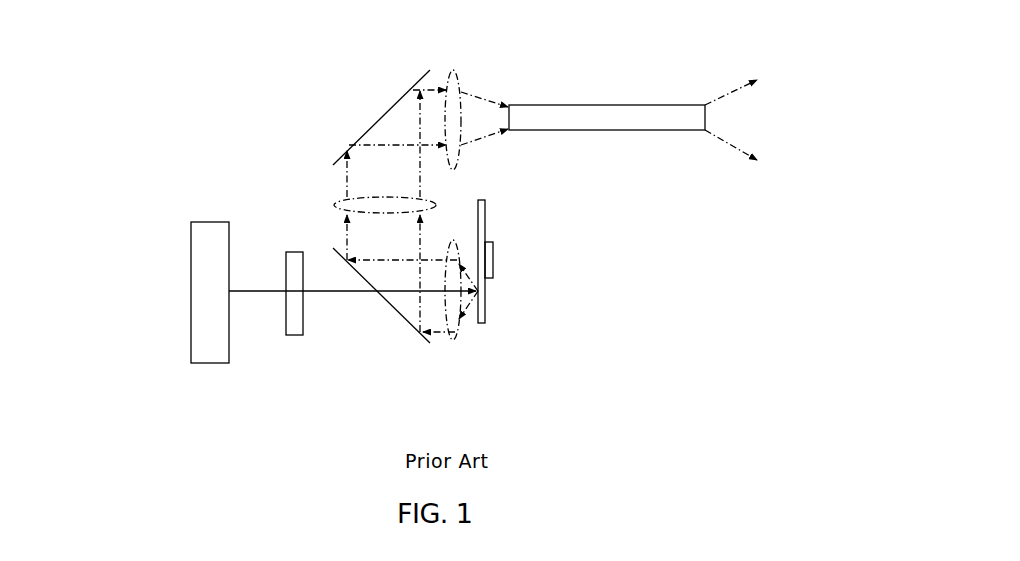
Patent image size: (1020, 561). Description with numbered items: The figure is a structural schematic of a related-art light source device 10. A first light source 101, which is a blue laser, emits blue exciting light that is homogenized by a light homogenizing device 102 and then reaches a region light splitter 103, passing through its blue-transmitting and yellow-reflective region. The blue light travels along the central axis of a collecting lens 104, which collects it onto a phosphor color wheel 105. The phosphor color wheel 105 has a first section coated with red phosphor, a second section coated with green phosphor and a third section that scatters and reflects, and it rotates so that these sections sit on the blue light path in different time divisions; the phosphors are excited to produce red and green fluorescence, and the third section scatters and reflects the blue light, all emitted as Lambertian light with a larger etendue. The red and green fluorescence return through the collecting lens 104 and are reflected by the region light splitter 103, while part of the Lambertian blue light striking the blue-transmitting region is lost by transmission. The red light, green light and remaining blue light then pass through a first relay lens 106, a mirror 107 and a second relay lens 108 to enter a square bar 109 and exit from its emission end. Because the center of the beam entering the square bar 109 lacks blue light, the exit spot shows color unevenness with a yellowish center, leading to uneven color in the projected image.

The light source device 10 is at (690, 273).
The first light source 101 is at (192, 328).
The light homogenizing device 102 is at (303, 337).
The region light splitter 103 is at (420, 333).
The collecting lens 104 is at (463, 343).
The phosphor color wheel 105 is at (485, 308).
The first relay lens 106 is at (333, 205).
The mirror 107 is at (357, 138).
The second relay lens 108 is at (452, 68).
The square bar 109 is at (513, 105).